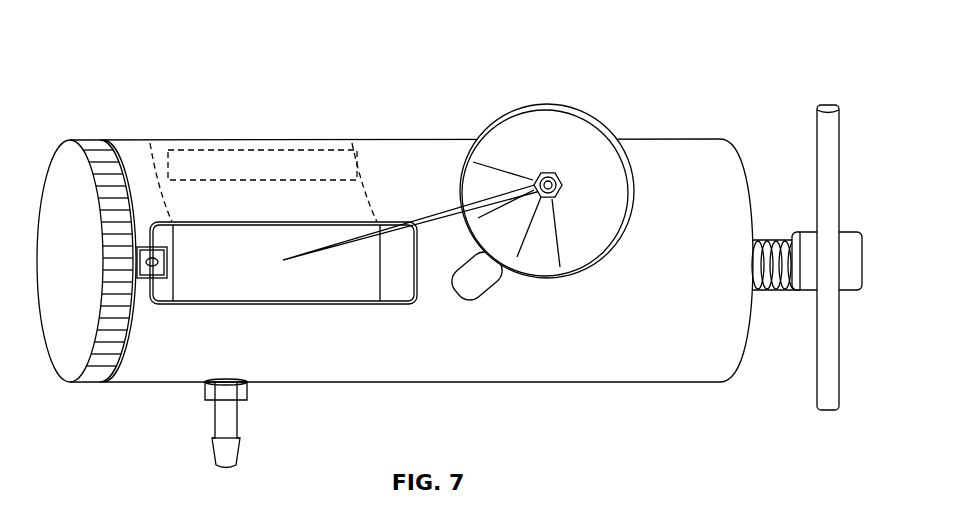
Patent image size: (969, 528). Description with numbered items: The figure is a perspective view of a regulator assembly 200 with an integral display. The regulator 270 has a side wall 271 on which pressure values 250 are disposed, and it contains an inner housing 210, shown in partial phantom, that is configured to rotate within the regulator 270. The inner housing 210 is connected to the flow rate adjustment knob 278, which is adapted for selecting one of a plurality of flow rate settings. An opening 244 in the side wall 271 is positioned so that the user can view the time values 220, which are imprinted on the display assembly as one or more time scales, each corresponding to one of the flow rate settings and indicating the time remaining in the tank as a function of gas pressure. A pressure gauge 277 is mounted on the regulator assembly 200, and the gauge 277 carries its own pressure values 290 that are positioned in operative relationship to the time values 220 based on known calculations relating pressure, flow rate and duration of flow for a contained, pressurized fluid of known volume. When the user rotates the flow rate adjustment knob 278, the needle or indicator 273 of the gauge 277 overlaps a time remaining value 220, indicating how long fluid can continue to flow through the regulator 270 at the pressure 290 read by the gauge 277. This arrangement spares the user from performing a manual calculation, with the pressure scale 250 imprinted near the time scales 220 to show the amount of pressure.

The regulator assembly 200 is at (126, 46).
The inner housing 210 is at (352, 143).
The time values 220 is at (183, 230).
The opening 244 is at (402, 278).
The pressure values 250 is at (160, 340).
The regulator 270 is at (694, 138).
The side wall 271 is at (405, 363).
The indicator 273 is at (440, 205).
The pressure gauge 277 is at (593, 98).
The flow rate adjustment knob 278 is at (76, 165).
The pressure values 290 is at (510, 182).